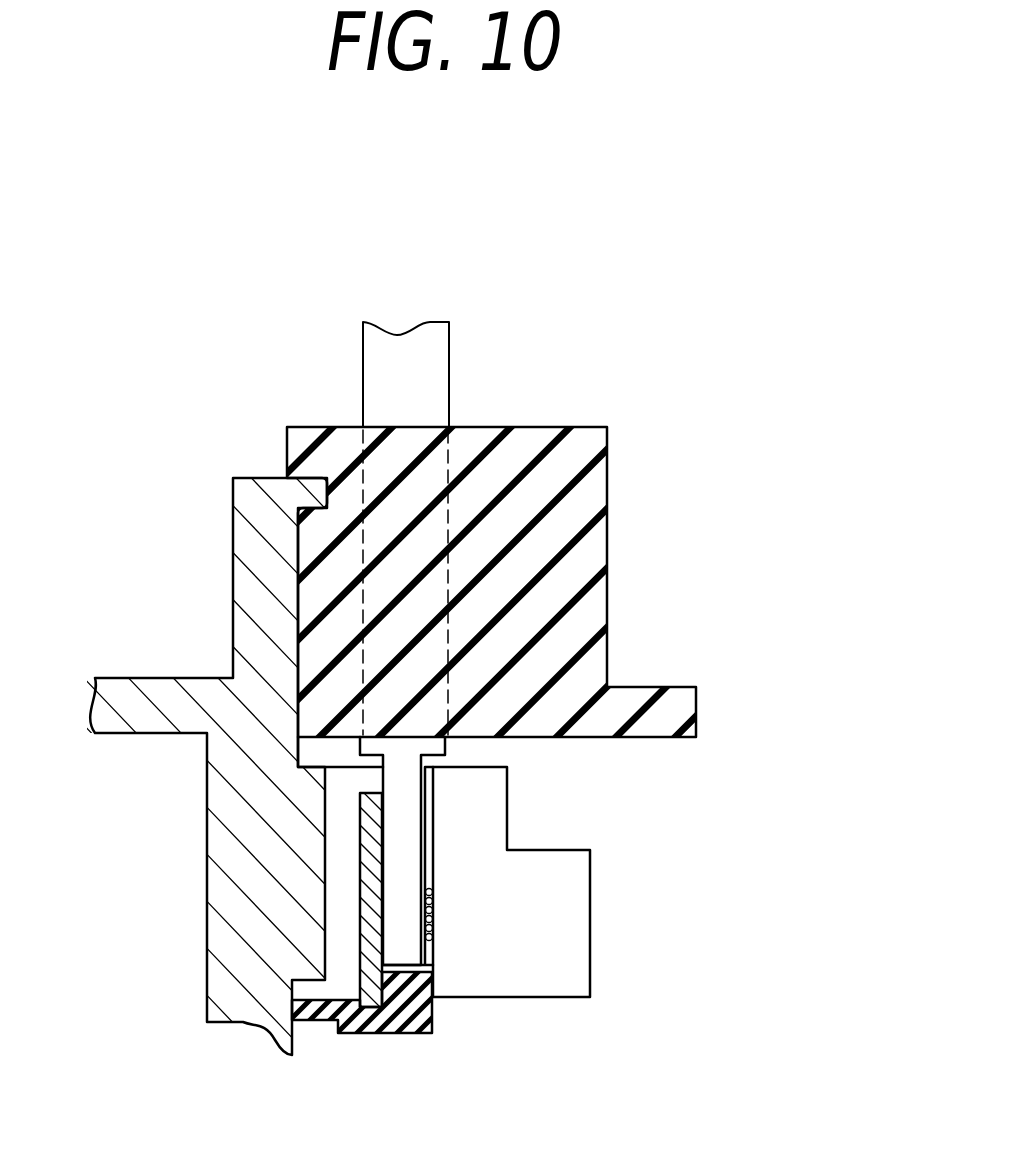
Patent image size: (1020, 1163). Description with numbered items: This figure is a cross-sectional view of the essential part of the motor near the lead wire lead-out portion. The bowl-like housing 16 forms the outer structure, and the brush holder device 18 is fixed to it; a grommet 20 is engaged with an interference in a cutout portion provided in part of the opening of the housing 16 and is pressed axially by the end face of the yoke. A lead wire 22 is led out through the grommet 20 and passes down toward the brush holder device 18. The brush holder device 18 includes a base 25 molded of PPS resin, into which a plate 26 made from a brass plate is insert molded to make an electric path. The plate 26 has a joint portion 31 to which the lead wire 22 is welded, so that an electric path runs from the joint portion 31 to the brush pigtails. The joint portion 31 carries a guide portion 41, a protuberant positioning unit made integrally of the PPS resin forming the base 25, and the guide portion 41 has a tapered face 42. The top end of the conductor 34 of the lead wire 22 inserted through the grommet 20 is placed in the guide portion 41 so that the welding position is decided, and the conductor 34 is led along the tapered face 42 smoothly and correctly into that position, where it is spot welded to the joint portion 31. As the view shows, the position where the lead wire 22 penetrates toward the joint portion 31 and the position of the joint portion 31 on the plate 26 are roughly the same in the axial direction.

The housing 16 is at (262, 567).
The brush holder device 18 is at (614, 415).
The grommet 20 is at (560, 520).
The lead wire 22 is at (427, 383).
The base 25 is at (433, 1013).
The plate 26 is at (357, 913).
The joint portion 31 is at (385, 846).
The conductor 34 is at (407, 810).
The guide portion 41 is at (433, 905).
The tapered face 42 is at (433, 928).